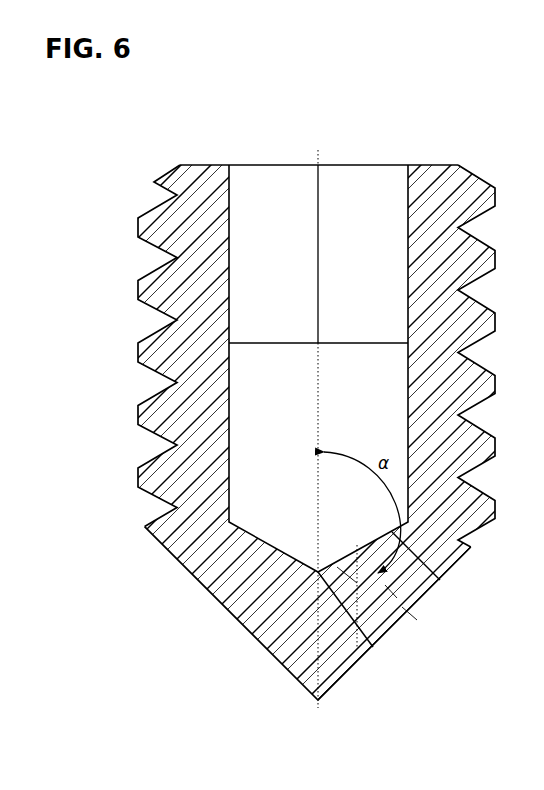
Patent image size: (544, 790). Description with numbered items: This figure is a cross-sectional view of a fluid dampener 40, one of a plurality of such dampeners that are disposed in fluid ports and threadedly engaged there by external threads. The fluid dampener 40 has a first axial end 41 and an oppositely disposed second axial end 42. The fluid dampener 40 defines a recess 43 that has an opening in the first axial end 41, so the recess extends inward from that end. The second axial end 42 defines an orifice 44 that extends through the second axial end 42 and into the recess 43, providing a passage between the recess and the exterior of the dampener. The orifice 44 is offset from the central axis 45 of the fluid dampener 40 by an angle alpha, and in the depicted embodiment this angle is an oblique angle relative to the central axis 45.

The fluid dampener 40 is at (147, 157).
The first axial end 41 is at (445, 163).
The second axial end 42 is at (245, 627).
The recess 43 is at (248, 343).
The orifice 44 is at (425, 560).
The central axis 45 is at (316, 481).